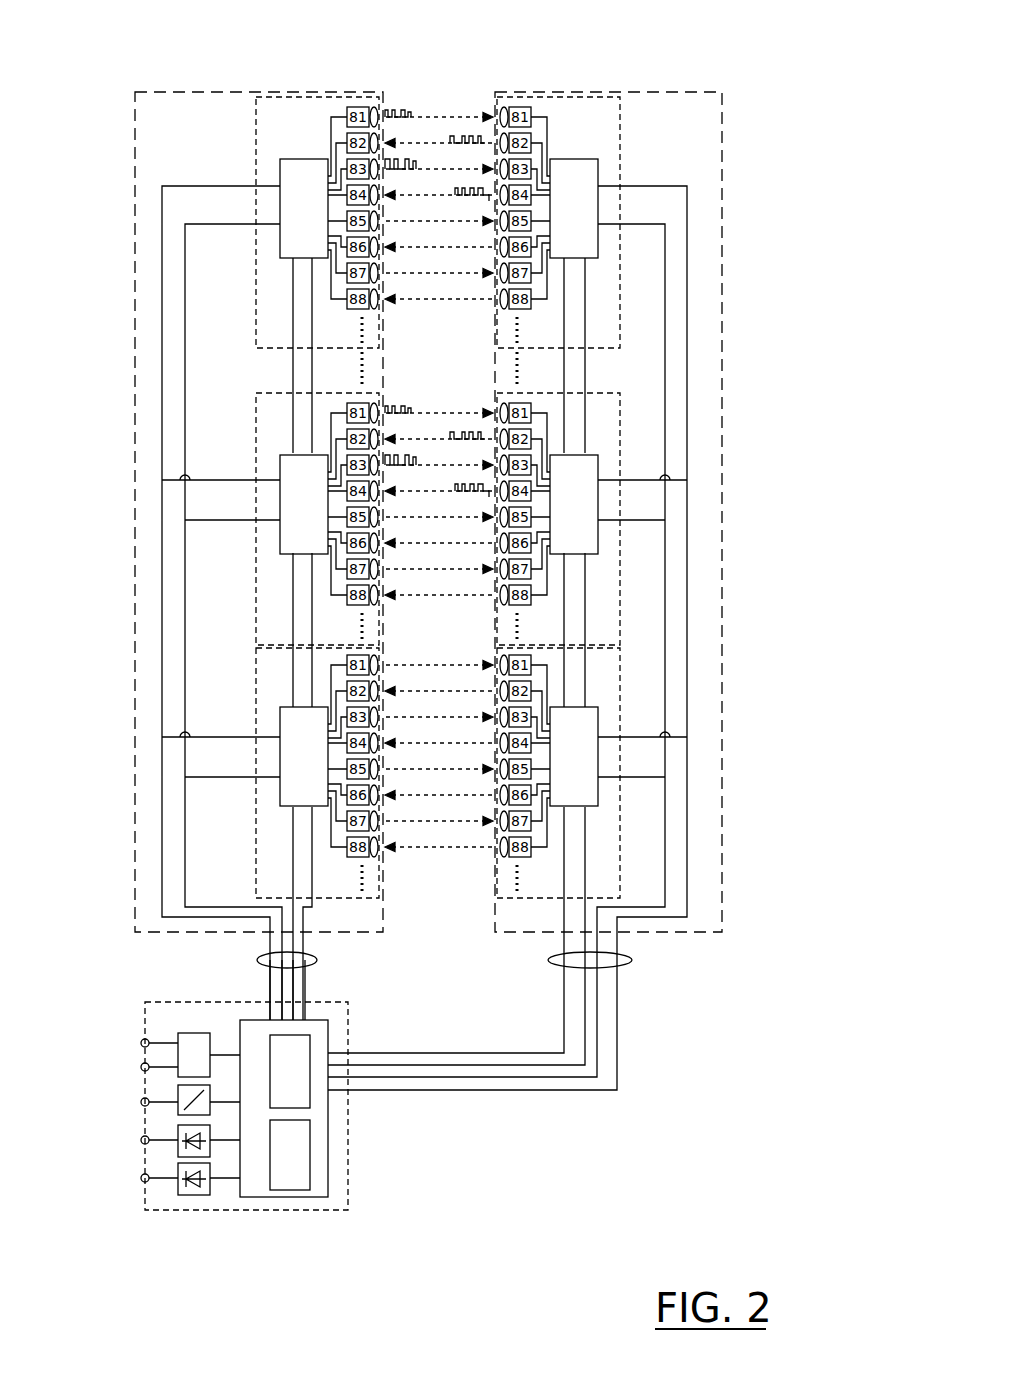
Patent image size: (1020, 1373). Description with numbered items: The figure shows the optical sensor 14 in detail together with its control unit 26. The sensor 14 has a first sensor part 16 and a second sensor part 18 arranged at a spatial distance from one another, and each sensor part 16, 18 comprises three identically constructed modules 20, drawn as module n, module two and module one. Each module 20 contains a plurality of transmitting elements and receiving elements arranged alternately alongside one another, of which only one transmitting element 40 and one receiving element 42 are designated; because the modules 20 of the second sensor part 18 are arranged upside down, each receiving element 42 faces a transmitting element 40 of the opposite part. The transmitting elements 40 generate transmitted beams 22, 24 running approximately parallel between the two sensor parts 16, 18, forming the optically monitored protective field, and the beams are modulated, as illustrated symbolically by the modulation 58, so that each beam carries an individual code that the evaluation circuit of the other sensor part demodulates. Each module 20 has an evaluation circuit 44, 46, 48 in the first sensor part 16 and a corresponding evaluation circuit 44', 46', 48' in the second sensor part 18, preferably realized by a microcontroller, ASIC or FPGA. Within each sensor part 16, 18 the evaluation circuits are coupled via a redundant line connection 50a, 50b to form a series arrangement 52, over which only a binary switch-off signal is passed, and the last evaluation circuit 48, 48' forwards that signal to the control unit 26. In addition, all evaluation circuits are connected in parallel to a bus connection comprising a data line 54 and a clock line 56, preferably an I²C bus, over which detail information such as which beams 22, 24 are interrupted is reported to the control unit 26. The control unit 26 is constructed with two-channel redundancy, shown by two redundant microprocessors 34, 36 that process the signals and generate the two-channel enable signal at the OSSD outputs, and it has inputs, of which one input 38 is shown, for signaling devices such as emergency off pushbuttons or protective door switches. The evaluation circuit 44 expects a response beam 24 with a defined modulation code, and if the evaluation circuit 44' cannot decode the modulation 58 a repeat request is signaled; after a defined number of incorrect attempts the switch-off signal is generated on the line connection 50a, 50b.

The sensor 14 is at (680, 958).
The first sensor part 16 is at (135, 152).
The second sensor part 18 is at (722, 152).
The module 20 is at (622, 142).
The transmitted beam 22 is at (440, 112).
The transmitted beam 24 is at (462, 112).
The control unit 26 is at (219, 1126).
The microprocessor 34 is at (293, 1190).
The microprocessor 36 is at (305, 1097).
The input 38 is at (157, 1102).
The transmitting element 40 is at (360, 107).
The receiving element 42 is at (520, 107).
The evaluation circuit 44 is at (294, 175).
The evaluation circuit 44' is at (583, 163).
The evaluation circuit 46 is at (210, 504).
The evaluation circuit 46' is at (660, 504).
The evaluation circuit 48 is at (207, 756).
The evaluation circuit 48' is at (663, 756).
The line connection 50a is at (560, 633).
The line connection 50b is at (580, 582).
The series arrangement 52 is at (342, 870).
The data line 54 is at (687, 256).
The clock line 56 is at (665, 312).
The modulation 58 is at (400, 108).